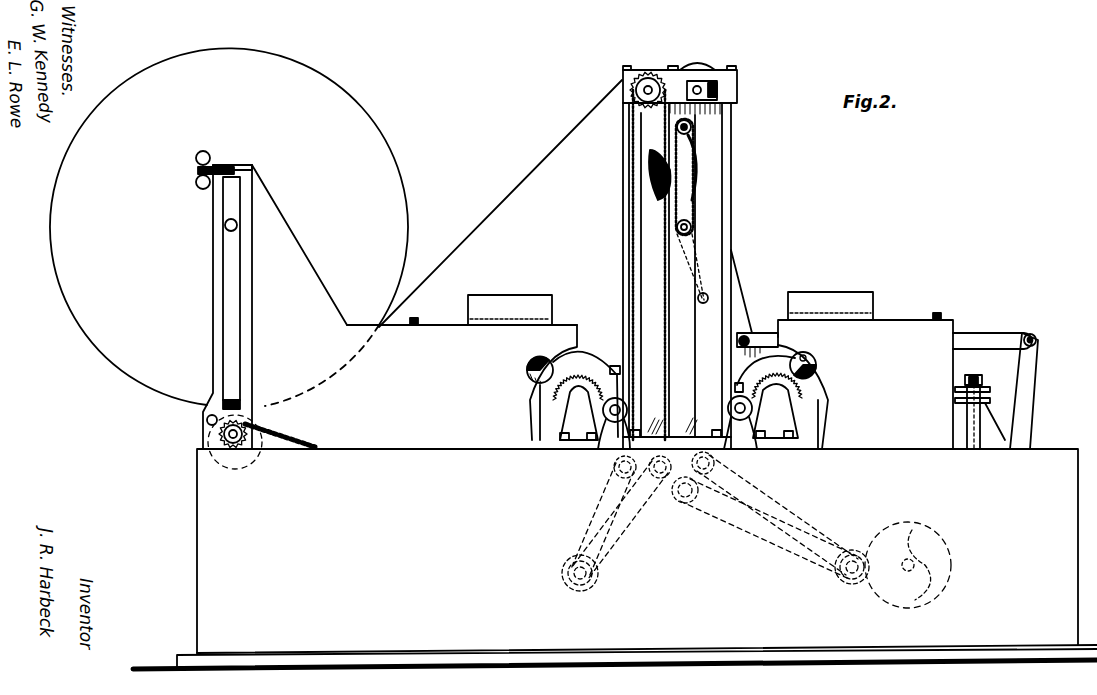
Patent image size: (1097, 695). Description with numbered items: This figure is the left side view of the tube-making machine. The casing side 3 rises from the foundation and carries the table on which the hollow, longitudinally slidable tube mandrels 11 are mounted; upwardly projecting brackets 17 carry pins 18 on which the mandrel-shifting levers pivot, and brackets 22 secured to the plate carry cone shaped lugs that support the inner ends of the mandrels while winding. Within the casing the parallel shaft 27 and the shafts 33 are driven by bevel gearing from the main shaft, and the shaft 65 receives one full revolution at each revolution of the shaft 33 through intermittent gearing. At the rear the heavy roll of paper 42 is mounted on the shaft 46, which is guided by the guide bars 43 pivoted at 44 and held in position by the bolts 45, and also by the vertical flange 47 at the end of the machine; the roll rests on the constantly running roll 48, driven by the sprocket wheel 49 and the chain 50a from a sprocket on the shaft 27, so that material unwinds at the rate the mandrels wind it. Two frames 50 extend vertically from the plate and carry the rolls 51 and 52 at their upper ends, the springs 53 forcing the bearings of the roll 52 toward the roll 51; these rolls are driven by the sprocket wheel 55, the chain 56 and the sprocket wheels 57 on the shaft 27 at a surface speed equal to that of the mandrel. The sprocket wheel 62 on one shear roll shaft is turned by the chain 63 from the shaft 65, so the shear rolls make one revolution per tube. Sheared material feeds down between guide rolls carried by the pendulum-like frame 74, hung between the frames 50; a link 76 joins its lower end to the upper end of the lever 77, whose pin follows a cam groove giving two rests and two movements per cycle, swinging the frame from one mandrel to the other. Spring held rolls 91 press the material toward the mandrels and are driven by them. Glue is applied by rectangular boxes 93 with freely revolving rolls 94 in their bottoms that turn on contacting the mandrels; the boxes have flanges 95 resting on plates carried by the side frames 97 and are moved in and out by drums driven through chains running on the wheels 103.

The side 3 is at (615, 559).
The tube mandrel 11 is at (553, 400).
The bracket 17 is at (985, 430).
The pin 18 is at (982, 378).
The bracket 22 is at (677, 406).
The shaft 27 is at (578, 592).
The shaft 33 is at (905, 570).
The roll of paper 42 is at (229, 227).
The guide bar 43 is at (213, 283).
The pivot 44 is at (207, 419).
The bolt 45 is at (198, 171).
The shaft 46 is at (225, 226).
The vertical flange 47 is at (253, 312).
The roll 48 is at (233, 400).
The sprocket wheel 49 is at (268, 450).
The frame 50 is at (722, 222).
The chain 50a is at (320, 437).
The roll 51 is at (648, 71).
The roll 52 is at (697, 64).
The spring 53 is at (718, 88).
The sprocket wheel 55 is at (642, 98).
The chain 56 is at (631, 178).
The sprocket wheel 57 is at (562, 585).
The sprocket wheel 62 is at (692, 127).
The chain 63 is at (697, 195).
The shaft 65 is at (838, 584).
The pendulum-like frame 74 is at (745, 302).
The link 76 is at (980, 332).
The lever 77 is at (1032, 391).
The spring held roll 91 is at (602, 450).
The box 93 is at (670, 308).
The roll 94 is at (555, 360).
The flange 95 is at (545, 322).
The side frame 97 is at (714, 384).
The wheel 103 is at (418, 322).